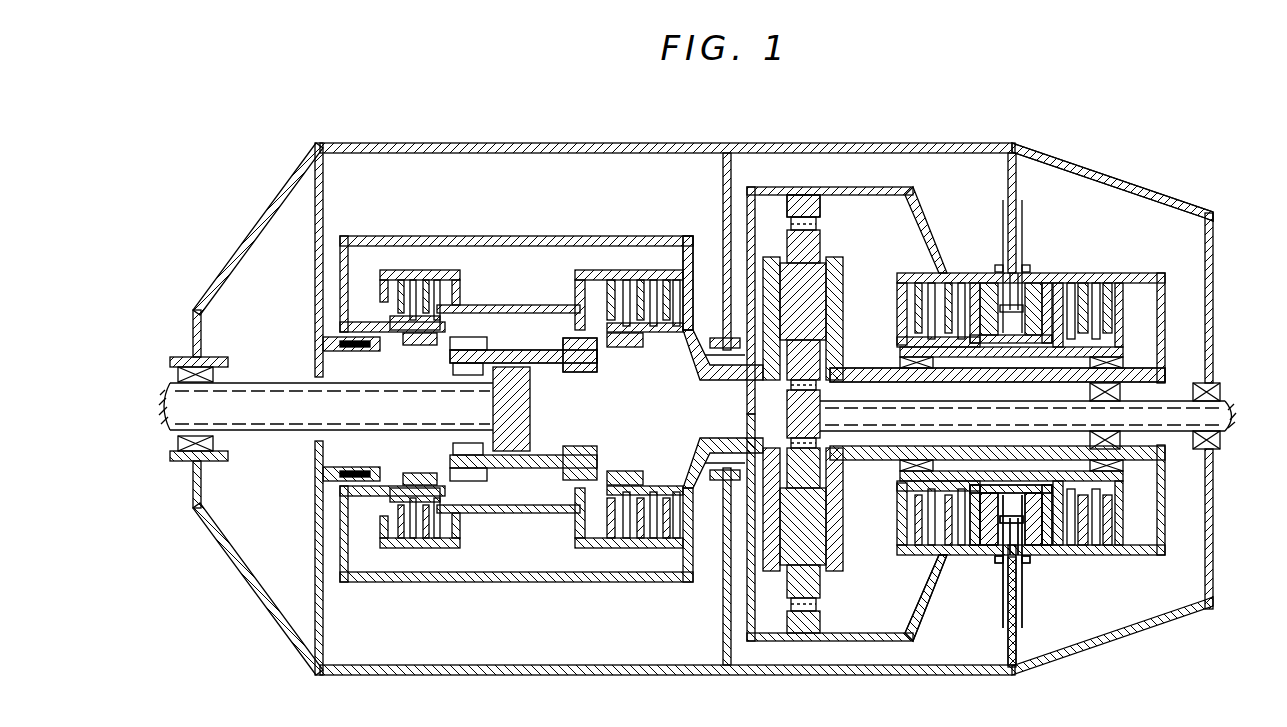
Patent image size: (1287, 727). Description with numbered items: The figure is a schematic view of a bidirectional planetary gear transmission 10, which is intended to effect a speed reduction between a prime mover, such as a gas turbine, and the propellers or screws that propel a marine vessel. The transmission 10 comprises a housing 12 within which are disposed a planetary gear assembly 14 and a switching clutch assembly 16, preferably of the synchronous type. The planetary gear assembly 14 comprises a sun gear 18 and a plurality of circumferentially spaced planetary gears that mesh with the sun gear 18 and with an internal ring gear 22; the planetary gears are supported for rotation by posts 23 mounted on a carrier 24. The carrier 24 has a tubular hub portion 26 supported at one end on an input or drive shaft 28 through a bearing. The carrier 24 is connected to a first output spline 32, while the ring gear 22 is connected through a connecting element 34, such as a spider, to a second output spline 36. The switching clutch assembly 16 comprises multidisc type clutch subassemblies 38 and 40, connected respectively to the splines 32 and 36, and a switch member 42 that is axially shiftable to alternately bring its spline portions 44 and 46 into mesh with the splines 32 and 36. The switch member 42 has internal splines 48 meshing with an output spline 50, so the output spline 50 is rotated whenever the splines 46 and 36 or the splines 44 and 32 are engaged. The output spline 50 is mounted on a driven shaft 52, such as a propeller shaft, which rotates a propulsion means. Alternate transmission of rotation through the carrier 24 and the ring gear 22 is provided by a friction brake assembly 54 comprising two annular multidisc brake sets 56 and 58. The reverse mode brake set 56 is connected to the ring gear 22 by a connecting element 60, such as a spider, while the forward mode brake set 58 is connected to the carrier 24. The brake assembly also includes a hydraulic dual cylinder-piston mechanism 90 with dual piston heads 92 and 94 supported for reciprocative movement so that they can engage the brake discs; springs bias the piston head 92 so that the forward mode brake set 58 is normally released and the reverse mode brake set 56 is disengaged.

The bidirectional planetary gear transmission 10 is at (1170, 178).
The housing 12 is at (540, 143).
The planetary gear assembly 14 is at (792, 182).
The switching clutch assembly 16 is at (499, 236).
The sun gear 18 is at (787, 413).
The internal ring gear 22 is at (812, 200).
The posts 23 is at (815, 284).
The carrier 24 is at (835, 305).
The tubular hub portion 26 is at (870, 368).
The input or drive shaft 28 is at (1228, 414).
The first output spline 32 is at (628, 347).
The connecting element 34 is at (666, 239).
The second output spline 36 is at (405, 347).
The multidisc clutch subassembly 38 is at (620, 272).
The multidisc clutch subassembly 40 is at (430, 270).
The switch member 42 is at (528, 350).
The spline portion 44 is at (580, 360).
The spline portion 46 is at (452, 344).
The internal splines 48 is at (542, 366).
The output spline 50 is at (520, 422).
The driven shaft 52 is at (243, 432).
The friction brake assembly 54 is at (1038, 262).
The reverse mode brake set 56 is at (950, 283).
The forward mode brake set 58 is at (1095, 275).
The connecting element 60 is at (924, 612).
The hydraulic dual cylinder-piston mechanism 90 is at (1002, 260).
The piston head 92 is at (983, 555).
The piston head 94 is at (1022, 555).